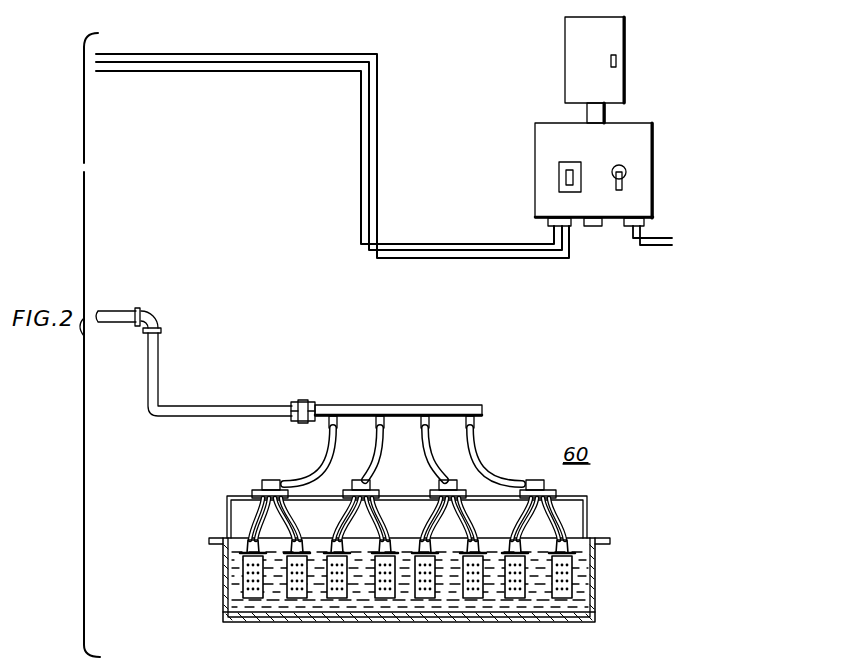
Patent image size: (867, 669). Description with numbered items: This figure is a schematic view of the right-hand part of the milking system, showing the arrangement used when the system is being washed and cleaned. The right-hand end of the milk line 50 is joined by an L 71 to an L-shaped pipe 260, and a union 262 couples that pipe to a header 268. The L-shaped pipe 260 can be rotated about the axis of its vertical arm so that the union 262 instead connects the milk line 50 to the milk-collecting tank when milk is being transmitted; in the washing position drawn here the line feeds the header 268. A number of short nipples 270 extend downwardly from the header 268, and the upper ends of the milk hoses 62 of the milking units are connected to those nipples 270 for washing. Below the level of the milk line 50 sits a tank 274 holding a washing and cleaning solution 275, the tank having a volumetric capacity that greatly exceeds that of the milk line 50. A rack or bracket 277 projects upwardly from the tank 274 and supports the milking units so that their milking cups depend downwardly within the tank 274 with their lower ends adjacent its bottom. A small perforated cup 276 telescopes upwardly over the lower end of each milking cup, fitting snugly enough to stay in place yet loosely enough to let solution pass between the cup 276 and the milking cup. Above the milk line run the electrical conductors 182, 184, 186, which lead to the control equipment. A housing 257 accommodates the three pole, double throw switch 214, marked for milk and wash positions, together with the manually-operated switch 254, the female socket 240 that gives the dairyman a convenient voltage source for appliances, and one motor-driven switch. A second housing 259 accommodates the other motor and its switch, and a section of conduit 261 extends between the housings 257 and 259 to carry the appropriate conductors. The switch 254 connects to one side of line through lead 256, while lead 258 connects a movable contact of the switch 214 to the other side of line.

The milk line 50 is at (123, 311).
The L 71 is at (157, 315).
The milk hoses 62 is at (375, 468).
The conductor 182 is at (260, 72).
The conductor 184 is at (190, 53).
The milk line 186 is at (213, 63).
The three pole, double throw switch 214 is at (623, 185).
The female socket 240 is at (600, 228).
The single pole, single throw manually-operated switch 254 is at (560, 181).
The lead 256 is at (672, 240).
The housing 257 is at (654, 137).
The lead 258 is at (662, 252).
The housing 259 is at (627, 72).
The L-shaped pipe 260 is at (165, 413).
The section of conduit 261 is at (592, 117).
The union 262 is at (302, 402).
The header 268 is at (388, 404).
The nipples 270 is at (330, 422).
The tank 274 is at (225, 592).
The washing and cleaning solution 275 is at (593, 577).
The cup 276 is at (295, 598).
The rack or bracket 277 is at (592, 505).